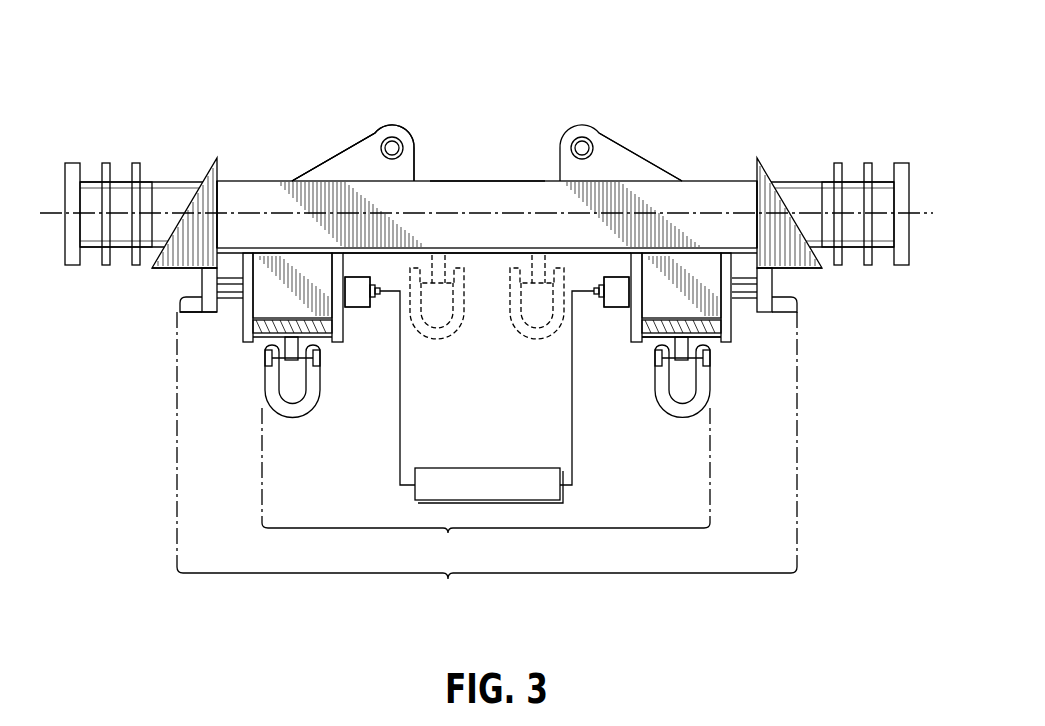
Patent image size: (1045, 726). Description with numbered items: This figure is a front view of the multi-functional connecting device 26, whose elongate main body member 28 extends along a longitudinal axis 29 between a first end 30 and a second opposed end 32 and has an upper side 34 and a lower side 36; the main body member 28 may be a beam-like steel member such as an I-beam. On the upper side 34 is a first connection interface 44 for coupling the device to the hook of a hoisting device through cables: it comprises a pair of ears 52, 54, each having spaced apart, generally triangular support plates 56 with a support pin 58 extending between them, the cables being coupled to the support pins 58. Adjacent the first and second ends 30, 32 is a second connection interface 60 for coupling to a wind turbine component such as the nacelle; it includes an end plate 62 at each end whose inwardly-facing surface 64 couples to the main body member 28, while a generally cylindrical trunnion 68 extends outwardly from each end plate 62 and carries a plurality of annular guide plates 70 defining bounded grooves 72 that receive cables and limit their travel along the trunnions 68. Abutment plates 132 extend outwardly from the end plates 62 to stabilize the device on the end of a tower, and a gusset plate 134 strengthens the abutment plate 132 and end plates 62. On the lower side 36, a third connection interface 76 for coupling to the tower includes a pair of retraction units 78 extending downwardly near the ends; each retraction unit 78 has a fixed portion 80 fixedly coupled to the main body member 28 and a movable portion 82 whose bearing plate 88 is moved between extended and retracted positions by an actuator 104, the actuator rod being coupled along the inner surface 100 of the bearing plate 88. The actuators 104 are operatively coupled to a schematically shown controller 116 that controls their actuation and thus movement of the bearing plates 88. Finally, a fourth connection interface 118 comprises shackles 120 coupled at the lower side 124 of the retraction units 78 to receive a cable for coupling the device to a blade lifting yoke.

The multi-functional connecting device 26 is at (714, 84).
The main body member 28 is at (497, 256).
The longitudinal axis 29 is at (933, 212).
The first end 30 is at (233, 180).
The second opposed end 32 is at (751, 180).
The upper side 34 is at (450, 180).
The lower side 36 is at (472, 256).
The first connection interface 44 is at (333, 132).
The ear 52 is at (330, 157).
The ear 54 is at (560, 138).
The support plates 56 is at (355, 141).
The support pin 58 is at (393, 136).
The second connection interface 60 is at (109, 157).
The end plate 62 is at (215, 156).
The inwardly-facing surface 64 is at (218, 196).
The trunnion 68 is at (163, 192).
The guide plates 70 is at (107, 266).
The bounded grooves 72 is at (75, 266).
The third connection interface 76 is at (487, 463).
The retraction units 78 is at (345, 354).
The fixed portion 80 is at (348, 318).
The movable portion 82 is at (187, 313).
The bearing plate 88 is at (787, 314).
The inner surface 100 is at (220, 312).
The actuator 104 is at (367, 274).
The controller 116 is at (541, 467).
The fourth connection interface 118 is at (486, 487).
The shackles 120 is at (291, 419).
The lower side of the retraction units 124 is at (710, 341).
The abutment plates 132 is at (157, 271).
The gusset plate 134 is at (218, 232).